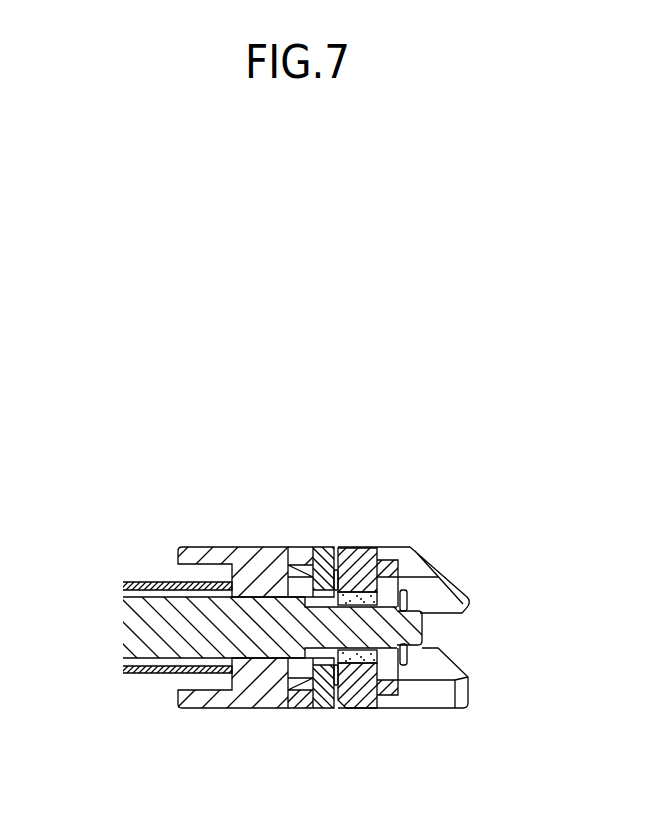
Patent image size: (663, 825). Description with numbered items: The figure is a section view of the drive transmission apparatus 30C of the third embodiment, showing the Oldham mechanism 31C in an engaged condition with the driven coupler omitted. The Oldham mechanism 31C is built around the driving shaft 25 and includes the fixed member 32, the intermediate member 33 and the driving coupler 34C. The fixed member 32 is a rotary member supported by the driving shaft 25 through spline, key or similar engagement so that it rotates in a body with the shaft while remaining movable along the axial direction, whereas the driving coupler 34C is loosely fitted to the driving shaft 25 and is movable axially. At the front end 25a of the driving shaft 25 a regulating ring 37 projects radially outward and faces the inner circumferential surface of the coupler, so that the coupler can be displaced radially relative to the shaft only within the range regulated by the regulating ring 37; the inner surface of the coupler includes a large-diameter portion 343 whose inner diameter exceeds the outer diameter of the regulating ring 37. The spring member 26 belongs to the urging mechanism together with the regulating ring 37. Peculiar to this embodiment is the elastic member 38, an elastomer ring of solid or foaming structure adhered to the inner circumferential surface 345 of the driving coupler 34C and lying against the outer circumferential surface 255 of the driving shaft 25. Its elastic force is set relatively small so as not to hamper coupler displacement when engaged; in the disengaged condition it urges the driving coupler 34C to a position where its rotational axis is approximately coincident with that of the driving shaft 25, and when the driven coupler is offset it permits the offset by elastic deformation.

The driving shaft 25 is at (132, 622).
The front end 25a is at (425, 635).
The spring member 26 is at (147, 675).
The drive transmission apparatus 30C is at (368, 570).
The Oldham mechanism 31C is at (291, 611).
The fixed member 32 is at (245, 708).
The intermediate member 33 is at (322, 712).
The driving coupler 34C is at (352, 712).
The inner circumferential surface 345 is at (342, 592).
The elastic member 38 is at (378, 597).
The outer circumferential surface 255 is at (360, 667).
The large-diameter portion 343 is at (440, 603).
The regulating ring 37 is at (412, 658).